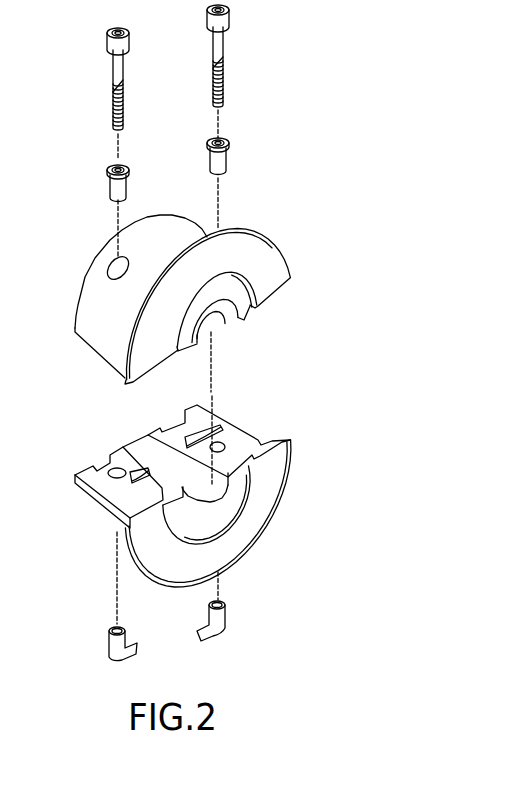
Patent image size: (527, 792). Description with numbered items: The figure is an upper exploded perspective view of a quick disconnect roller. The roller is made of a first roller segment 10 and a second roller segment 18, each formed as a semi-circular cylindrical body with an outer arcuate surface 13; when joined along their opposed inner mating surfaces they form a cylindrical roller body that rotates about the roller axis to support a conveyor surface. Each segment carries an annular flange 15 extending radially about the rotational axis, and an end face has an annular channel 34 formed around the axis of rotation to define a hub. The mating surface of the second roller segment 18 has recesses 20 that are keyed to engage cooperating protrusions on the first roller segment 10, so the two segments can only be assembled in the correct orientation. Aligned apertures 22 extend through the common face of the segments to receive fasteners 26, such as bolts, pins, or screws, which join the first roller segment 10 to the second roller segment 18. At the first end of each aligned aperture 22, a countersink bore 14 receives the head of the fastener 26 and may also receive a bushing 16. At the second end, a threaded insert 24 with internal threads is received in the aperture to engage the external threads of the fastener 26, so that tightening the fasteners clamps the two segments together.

The first roller segment 10 is at (283, 227).
The outer arcuate surface 13 is at (85, 317).
The countersink bore 14 is at (110, 268).
The annular flange 15 is at (288, 268).
The bushing 16 is at (122, 188).
The second roller segment 18 is at (272, 497).
The recess 20 is at (183, 420).
The aligned apertures 22 is at (110, 471).
The threaded insert 24 is at (128, 643).
The fastener 26 is at (111, 89).
The annular channel 34 is at (242, 306).